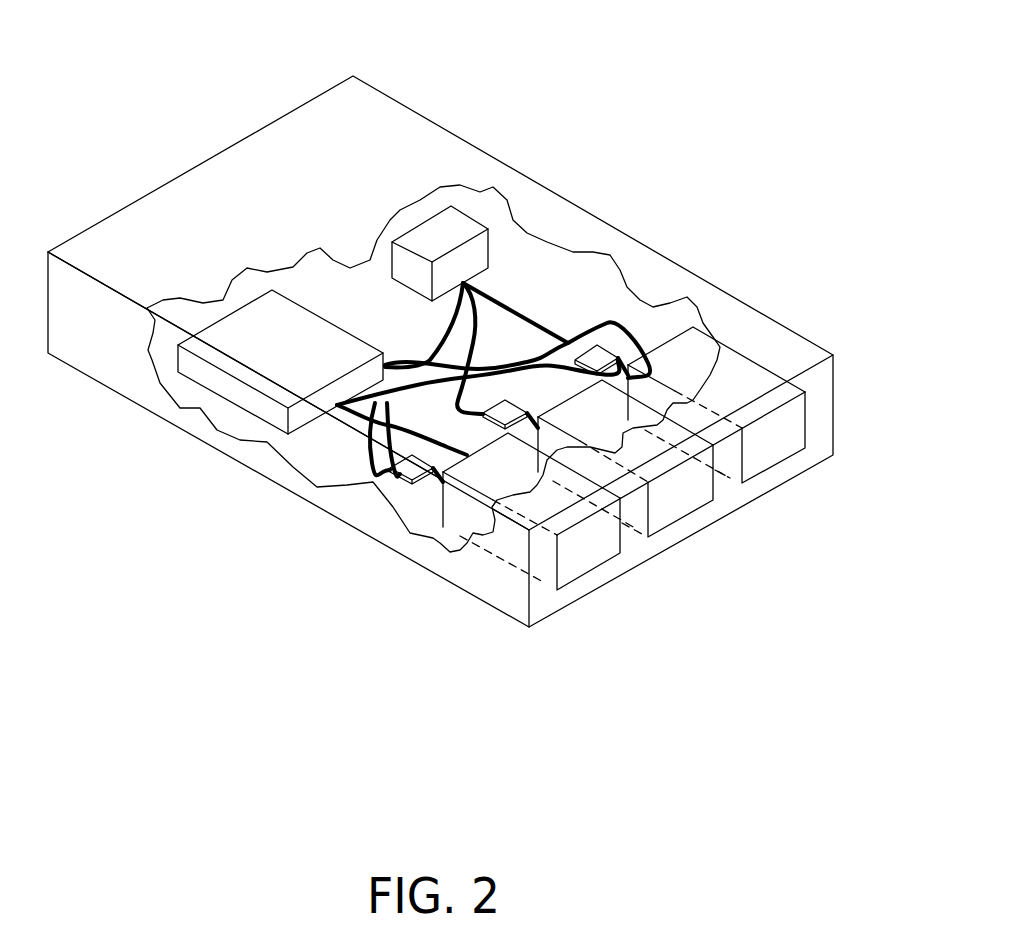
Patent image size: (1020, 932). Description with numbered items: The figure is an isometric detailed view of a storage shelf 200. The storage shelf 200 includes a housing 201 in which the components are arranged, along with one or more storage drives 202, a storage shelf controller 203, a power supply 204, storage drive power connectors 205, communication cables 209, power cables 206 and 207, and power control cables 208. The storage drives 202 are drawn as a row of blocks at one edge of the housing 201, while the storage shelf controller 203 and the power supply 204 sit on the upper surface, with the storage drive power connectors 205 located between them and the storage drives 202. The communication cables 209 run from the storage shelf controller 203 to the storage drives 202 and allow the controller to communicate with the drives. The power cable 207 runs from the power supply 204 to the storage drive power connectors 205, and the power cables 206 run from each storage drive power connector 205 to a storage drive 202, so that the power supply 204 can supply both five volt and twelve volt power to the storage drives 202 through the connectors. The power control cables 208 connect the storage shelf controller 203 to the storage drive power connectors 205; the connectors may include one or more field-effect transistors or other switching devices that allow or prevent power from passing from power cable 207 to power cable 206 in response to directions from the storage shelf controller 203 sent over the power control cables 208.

The storage shelf 200 is at (666, 50).
The housing 201 is at (553, 613).
The storage drives 202 is at (773, 467).
The storage shelf controller 203 is at (297, 300).
The power supply 204 is at (490, 245).
The storage drive power connectors 205 is at (600, 343).
The power cable 206 is at (625, 357).
The power cable 207 is at (463, 283).
The power control cables 208 is at (383, 360).
The communication cables 209 is at (337, 407).